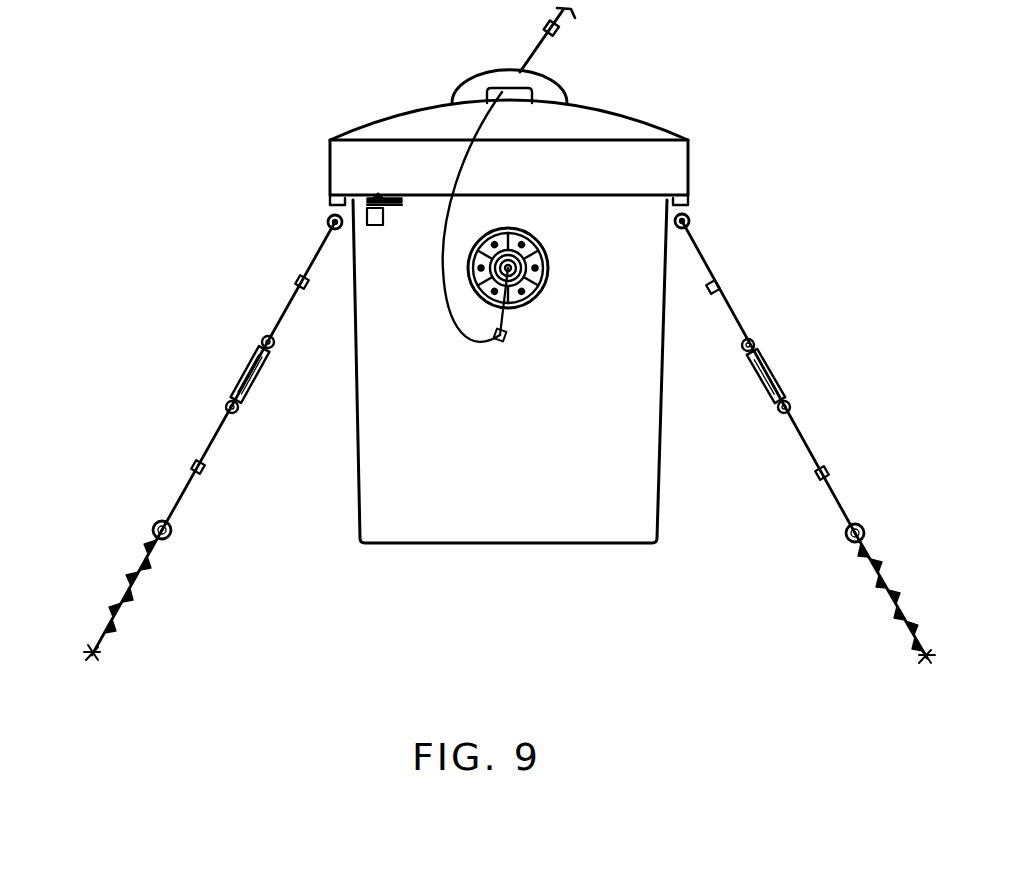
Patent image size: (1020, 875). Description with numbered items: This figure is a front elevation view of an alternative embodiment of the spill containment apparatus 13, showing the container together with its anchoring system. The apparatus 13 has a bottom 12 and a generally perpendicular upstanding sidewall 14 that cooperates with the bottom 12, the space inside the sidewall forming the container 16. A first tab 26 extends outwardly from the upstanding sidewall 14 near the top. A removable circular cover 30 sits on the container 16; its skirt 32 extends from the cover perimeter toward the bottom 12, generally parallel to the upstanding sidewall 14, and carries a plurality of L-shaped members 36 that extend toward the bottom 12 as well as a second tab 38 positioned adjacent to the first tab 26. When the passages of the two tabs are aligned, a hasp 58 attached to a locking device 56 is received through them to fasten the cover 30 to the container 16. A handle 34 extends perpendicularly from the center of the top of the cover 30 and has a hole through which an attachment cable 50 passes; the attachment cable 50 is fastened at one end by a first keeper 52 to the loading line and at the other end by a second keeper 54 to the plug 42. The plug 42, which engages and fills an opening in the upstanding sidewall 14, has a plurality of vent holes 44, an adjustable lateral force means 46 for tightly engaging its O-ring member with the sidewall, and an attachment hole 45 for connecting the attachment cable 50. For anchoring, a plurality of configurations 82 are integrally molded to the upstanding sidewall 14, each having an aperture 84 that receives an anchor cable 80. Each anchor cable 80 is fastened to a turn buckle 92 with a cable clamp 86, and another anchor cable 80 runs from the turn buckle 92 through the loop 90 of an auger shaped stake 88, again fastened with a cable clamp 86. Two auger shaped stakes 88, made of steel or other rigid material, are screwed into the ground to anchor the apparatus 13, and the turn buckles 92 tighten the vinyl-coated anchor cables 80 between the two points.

The bottom 12 is at (522, 545).
The apparatus 13 is at (713, 112).
The upstanding sidewall 14 is at (670, 402).
The container 16 is at (583, 419).
The first tab 26 is at (402, 203).
The removable circular cover 30 is at (549, 128).
The skirt 32 is at (330, 157).
The handle 34 is at (540, 78).
The L-shaped members 36 is at (322, 200).
The second tab 38 is at (386, 199).
The plug 42 is at (530, 268).
The vent holes 44 is at (538, 261).
The attachment hole 45 is at (497, 295).
The adjustable lateral force means 46 is at (520, 250).
The attachment cable 50 is at (523, 62).
The first keeper 52 is at (565, 33).
The second keeper 54 is at (508, 338).
The locking device 56 is at (385, 226).
The hasp 58 is at (378, 196).
The anchor cable 80 is at (292, 313).
The configurations 82 is at (326, 224).
The aperture 84 is at (337, 236).
The cable clamp 86 is at (295, 281).
The auger shaped stake 88 is at (132, 595).
The loop 90 is at (175, 532).
The turn buckle 92 is at (237, 372).